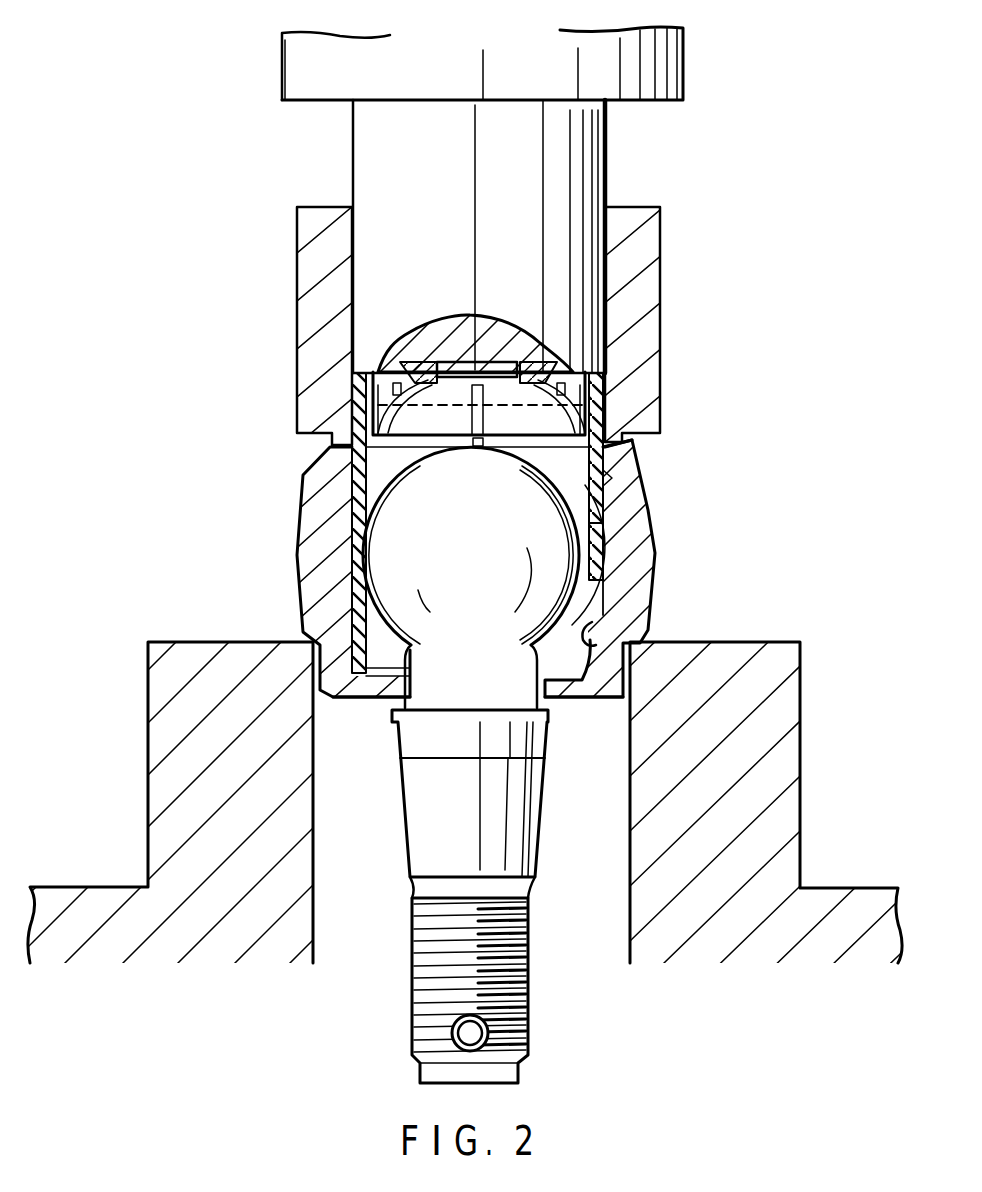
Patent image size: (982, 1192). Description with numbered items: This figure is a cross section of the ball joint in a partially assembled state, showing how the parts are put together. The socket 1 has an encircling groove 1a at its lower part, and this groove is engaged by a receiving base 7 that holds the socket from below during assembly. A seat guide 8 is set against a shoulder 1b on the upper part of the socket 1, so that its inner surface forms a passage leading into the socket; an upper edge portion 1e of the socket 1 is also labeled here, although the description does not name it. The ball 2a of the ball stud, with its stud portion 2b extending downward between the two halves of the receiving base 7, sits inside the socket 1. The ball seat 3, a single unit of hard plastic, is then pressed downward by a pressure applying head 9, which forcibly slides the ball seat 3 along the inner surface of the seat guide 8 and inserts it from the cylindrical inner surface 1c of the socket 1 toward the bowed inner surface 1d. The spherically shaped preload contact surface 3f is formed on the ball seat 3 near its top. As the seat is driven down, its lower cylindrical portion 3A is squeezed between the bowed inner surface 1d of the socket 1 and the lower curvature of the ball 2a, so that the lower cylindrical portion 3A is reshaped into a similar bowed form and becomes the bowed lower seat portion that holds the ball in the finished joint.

The socket 1 is at (502, 579).
The encircling groove 1a is at (607, 699).
The shoulder 1b is at (612, 478).
The cylindrical inner surface 1c is at (590, 530).
The bowed inner surface 1d is at (603, 620).
The upper edge of housing 1e is at (632, 447).
The ball 2a is at (585, 580).
The stud portion 2b is at (527, 840).
The ball seat 3 is at (519, 463).
The lower cylindrical portion 3A is at (657, 553).
The preload contact surface 3f is at (528, 368).
The receiving base 7 is at (787, 703).
The seat guide 8 is at (643, 297).
The pressure applying head 9 is at (577, 163).